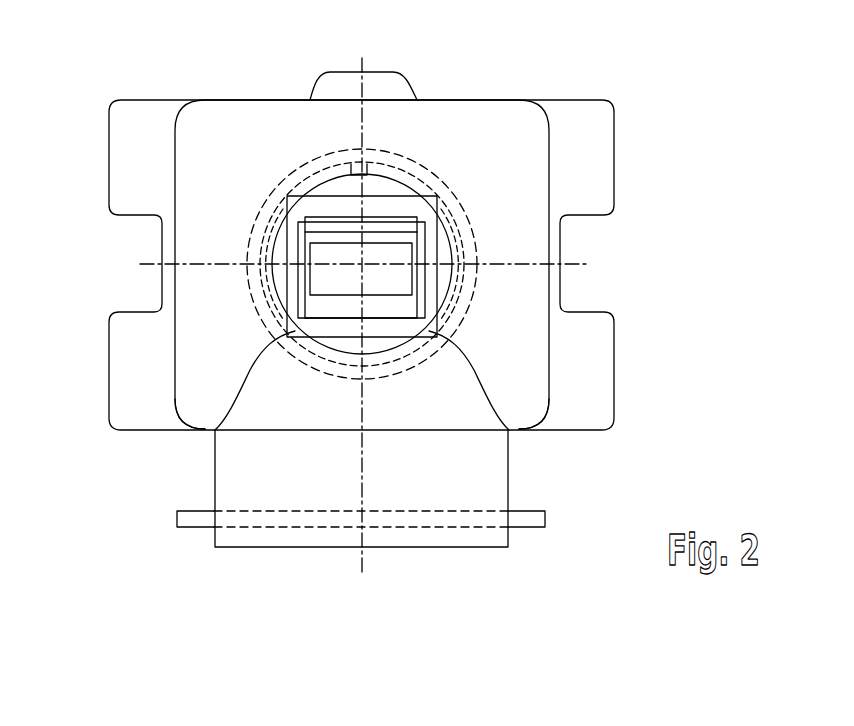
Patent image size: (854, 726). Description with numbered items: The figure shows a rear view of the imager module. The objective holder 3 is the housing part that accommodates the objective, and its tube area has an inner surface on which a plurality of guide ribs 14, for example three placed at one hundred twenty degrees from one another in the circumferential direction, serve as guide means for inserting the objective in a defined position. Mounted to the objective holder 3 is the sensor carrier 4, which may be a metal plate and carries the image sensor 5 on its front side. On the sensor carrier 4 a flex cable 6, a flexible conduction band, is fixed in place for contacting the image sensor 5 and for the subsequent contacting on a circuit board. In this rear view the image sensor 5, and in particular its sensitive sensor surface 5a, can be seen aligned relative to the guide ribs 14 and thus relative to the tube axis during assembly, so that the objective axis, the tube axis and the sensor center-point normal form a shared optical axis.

The objective holder 3 is at (203, 205).
The sensor carrier 4 is at (596, 322).
The image sensor 5 is at (398, 245).
The sensitive sensor surface 5a is at (383, 258).
The flex cable 6 is at (498, 532).
The guide ribs 14 is at (362, 173).